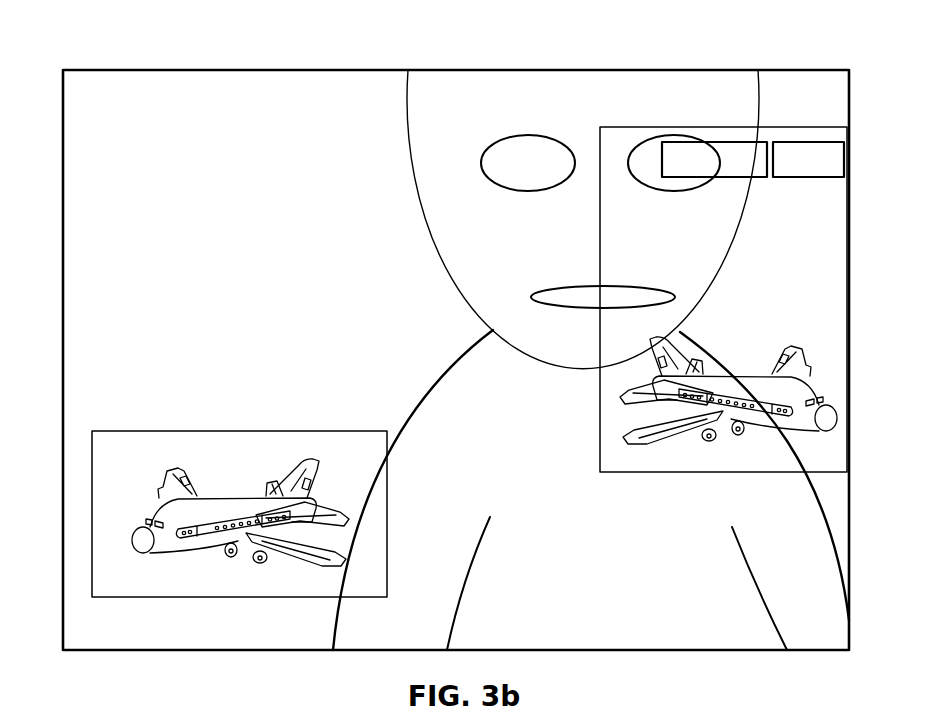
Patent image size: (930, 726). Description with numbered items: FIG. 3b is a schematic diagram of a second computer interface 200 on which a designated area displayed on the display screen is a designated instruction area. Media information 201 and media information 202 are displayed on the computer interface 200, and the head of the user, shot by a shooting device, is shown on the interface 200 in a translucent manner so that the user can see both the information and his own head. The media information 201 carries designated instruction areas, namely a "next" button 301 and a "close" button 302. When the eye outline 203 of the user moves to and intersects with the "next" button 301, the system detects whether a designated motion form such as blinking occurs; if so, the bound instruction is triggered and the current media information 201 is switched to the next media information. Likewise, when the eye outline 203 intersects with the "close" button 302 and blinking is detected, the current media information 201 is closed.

The computer interface 200 is at (410, 70).
The media information 201 is at (732, 473).
The media information 202 is at (228, 431).
The eye outline 203 is at (636, 148).
The next button 301 is at (713, 143).
The close button 302 is at (818, 142).